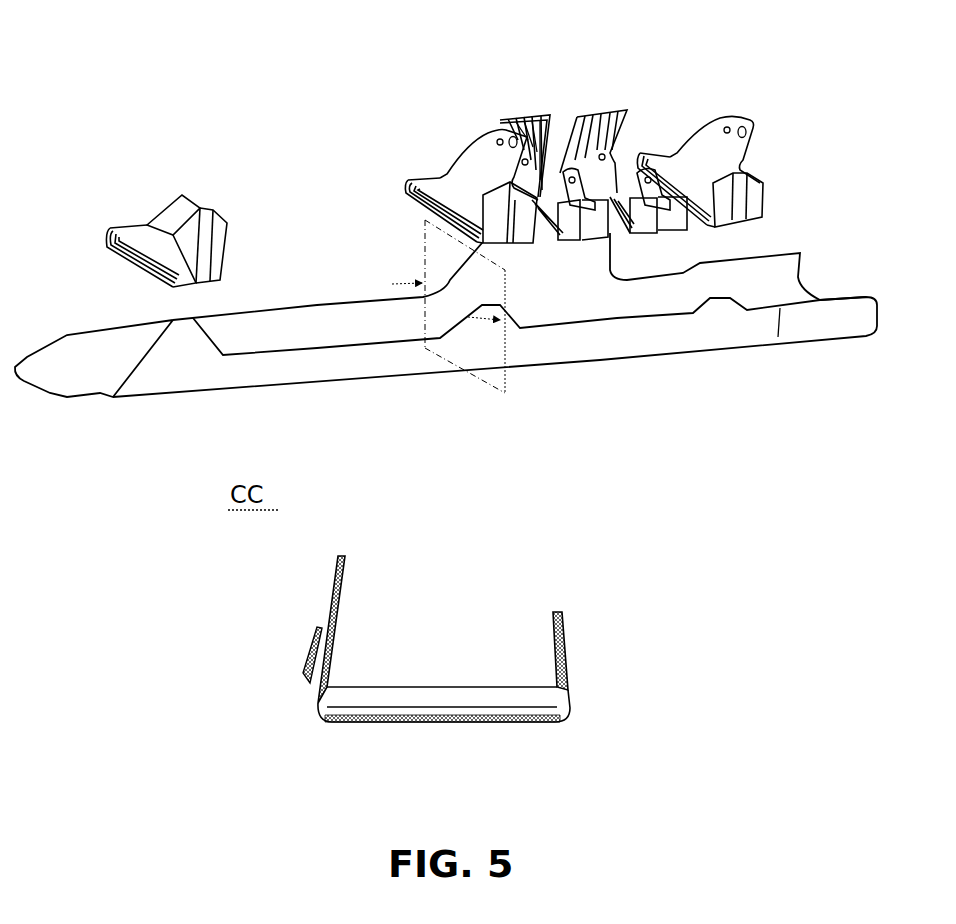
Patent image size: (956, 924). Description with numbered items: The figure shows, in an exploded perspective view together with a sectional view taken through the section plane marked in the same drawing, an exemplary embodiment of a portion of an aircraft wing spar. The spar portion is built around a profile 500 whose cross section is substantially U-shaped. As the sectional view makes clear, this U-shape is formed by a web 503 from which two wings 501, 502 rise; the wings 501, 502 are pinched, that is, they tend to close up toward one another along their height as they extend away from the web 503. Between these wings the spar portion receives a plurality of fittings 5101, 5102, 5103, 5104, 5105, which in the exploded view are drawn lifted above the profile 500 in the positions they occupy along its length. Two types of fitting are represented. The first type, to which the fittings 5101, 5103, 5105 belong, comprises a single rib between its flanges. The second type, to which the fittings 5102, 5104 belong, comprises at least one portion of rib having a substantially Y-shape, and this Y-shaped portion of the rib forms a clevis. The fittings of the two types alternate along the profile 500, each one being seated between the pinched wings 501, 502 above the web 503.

The profile 500 is at (337, 278).
The fitting 5101 is at (160, 218).
The fitting 5102 is at (533, 117).
The fitting 5103 is at (460, 180).
The fitting 5104 is at (597, 117).
The fitting 5105 is at (713, 150).
The wing 501 is at (557, 673).
The wing 502 is at (345, 578).
The web 503 is at (400, 717).